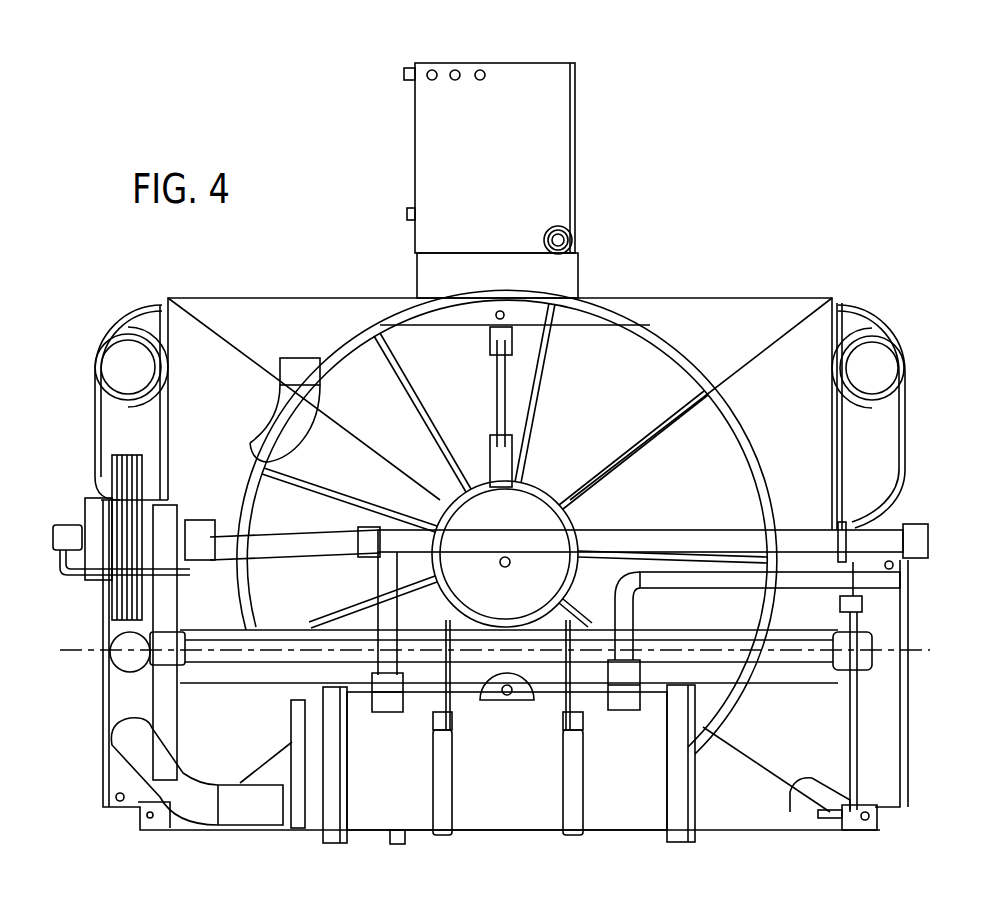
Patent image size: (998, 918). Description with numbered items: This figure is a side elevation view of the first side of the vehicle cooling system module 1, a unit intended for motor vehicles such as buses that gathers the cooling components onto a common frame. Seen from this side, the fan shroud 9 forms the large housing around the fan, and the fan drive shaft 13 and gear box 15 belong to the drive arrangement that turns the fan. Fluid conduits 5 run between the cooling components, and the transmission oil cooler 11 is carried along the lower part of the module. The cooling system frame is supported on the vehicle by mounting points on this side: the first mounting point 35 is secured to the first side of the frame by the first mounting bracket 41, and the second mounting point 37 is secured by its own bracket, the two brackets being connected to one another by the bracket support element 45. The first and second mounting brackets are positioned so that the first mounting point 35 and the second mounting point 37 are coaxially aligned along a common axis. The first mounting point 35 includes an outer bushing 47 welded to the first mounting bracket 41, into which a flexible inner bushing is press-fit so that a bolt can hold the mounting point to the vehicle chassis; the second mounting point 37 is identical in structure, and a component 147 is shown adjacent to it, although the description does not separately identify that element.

The cooling system module 1 is at (779, 150).
The fluid conduits 5 is at (195, 805).
The fan shroud 9 is at (242, 305).
The transmission oil cooler 11 is at (500, 830).
The fan drive shaft 13 is at (235, 545).
The gear box 15 is at (525, 585).
The first mounting point 35 is at (876, 634).
The second mounting point 37 is at (135, 660).
The first mounting bracket 41 is at (862, 783).
The bracket support element 45 is at (780, 670).
The outer bushing 47 is at (857, 660).
The coupling 147 is at (160, 640).